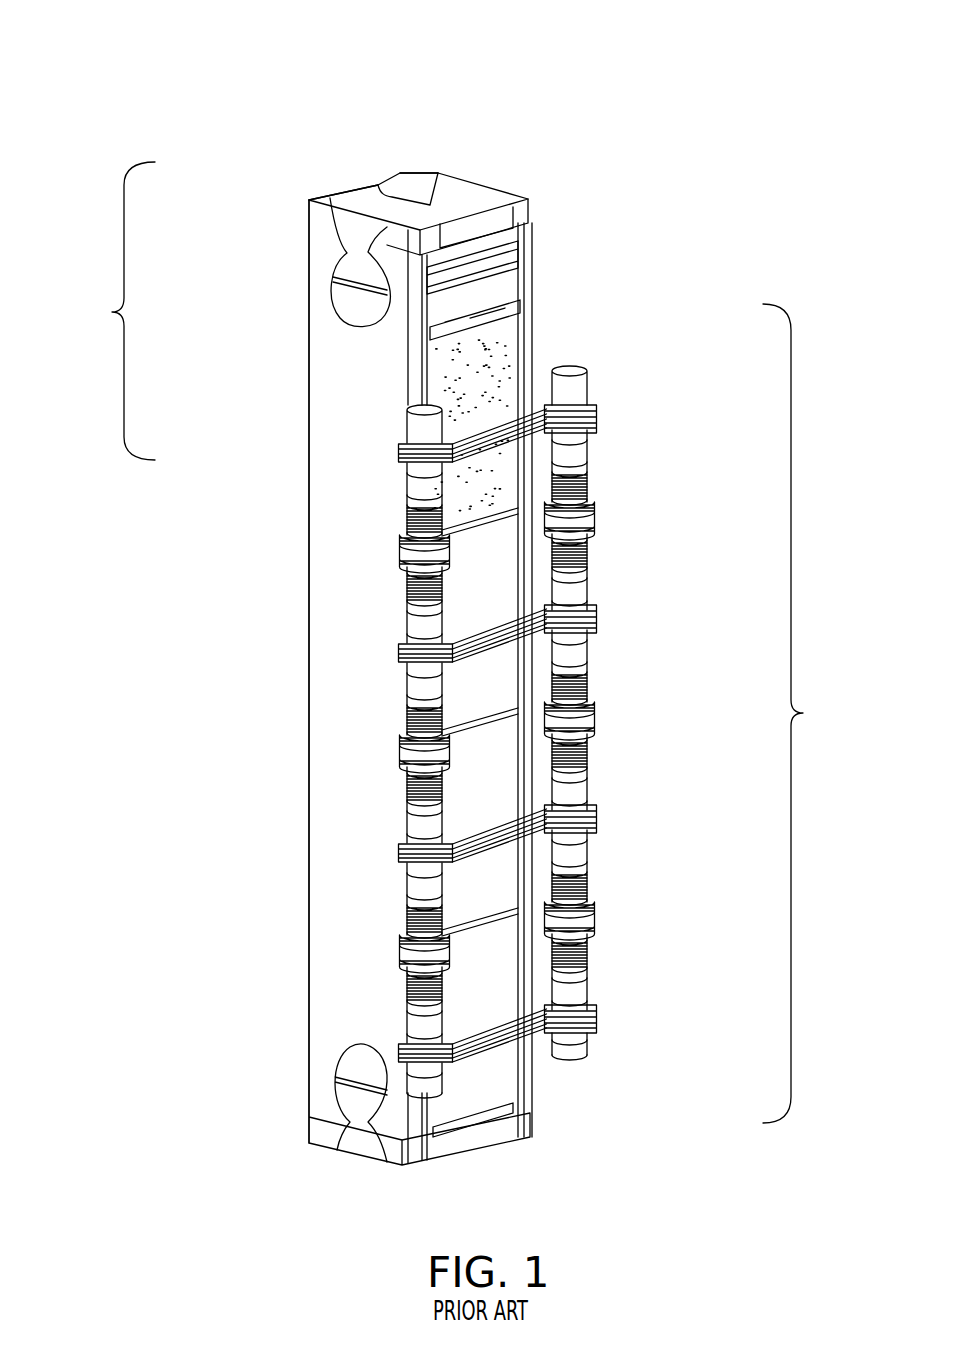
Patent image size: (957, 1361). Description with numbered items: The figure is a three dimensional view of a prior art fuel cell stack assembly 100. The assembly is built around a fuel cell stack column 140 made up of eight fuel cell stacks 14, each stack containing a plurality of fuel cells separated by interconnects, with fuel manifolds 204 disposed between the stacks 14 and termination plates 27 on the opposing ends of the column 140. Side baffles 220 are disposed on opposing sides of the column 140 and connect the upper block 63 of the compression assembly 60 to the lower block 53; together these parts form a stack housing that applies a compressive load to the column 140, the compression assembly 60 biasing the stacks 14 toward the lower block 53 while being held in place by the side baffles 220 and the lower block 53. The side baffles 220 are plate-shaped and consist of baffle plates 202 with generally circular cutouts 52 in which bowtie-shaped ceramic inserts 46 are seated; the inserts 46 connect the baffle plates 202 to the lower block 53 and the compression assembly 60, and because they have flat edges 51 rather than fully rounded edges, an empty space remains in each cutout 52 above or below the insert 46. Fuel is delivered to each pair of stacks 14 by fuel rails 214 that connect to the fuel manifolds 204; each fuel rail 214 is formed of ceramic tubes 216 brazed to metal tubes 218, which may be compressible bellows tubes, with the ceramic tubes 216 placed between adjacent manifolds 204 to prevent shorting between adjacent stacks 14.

The fuel cell stack assembly 100 is at (292, 82).
The side baffles 220 is at (112, 312).
The fuel cell stack column 140 is at (803, 713).
The compression assembly 60 is at (545, 208).
The upper block 63 is at (473, 193).
The flat edges 51 is at (357, 210).
The ceramic inserts 46 is at (338, 238).
The circular cutouts 52 is at (343, 308).
The lower block 53 is at (310, 1125).
The baffle plates 202 is at (332, 440).
The termination plates 27 is at (511, 310).
The metal tubes 218 is at (405, 638).
The ceramic tubes 216 is at (403, 768).
The fuel manifolds 204 is at (406, 464).
The fuel rails 214 is at (624, 516).
The fuel cell stacks 14 is at (488, 488).